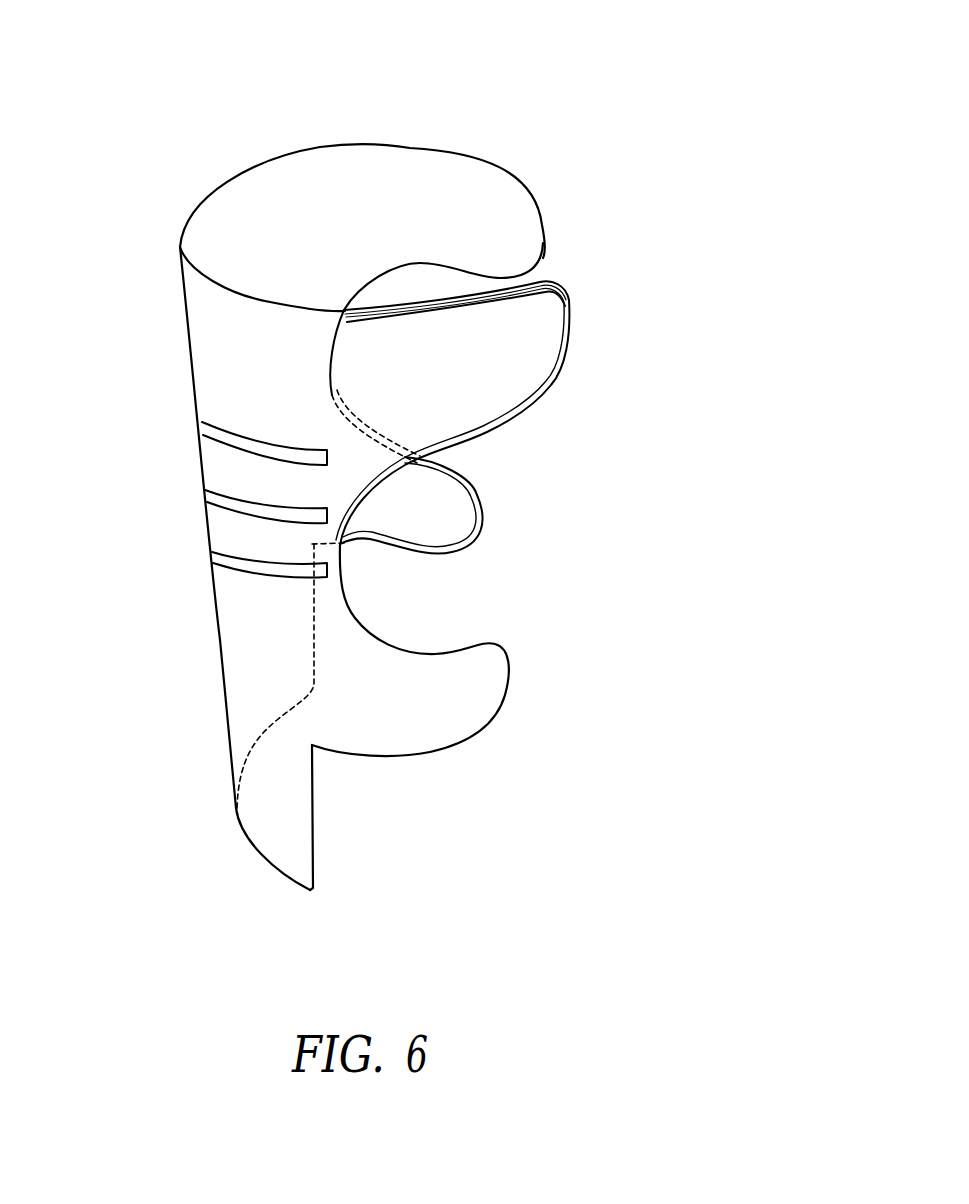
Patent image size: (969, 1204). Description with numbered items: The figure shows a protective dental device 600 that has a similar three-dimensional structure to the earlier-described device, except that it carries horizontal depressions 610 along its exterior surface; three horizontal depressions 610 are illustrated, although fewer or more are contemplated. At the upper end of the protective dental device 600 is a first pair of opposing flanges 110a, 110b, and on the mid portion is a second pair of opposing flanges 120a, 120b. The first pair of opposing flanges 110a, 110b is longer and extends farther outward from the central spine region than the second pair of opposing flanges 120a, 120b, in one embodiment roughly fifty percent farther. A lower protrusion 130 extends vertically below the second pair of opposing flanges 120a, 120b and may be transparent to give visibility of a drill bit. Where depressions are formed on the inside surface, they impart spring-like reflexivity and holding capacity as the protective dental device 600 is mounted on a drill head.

The protective dental device 600 is at (387, 90).
The first opposing flange 110a is at (502, 230).
The first opposing flange 110b is at (550, 318).
The second opposing flange 120a is at (445, 528).
The second opposing flange 120b is at (480, 687).
The lower protrusion 130 is at (303, 853).
The horizontal depressions 610 is at (197, 432).